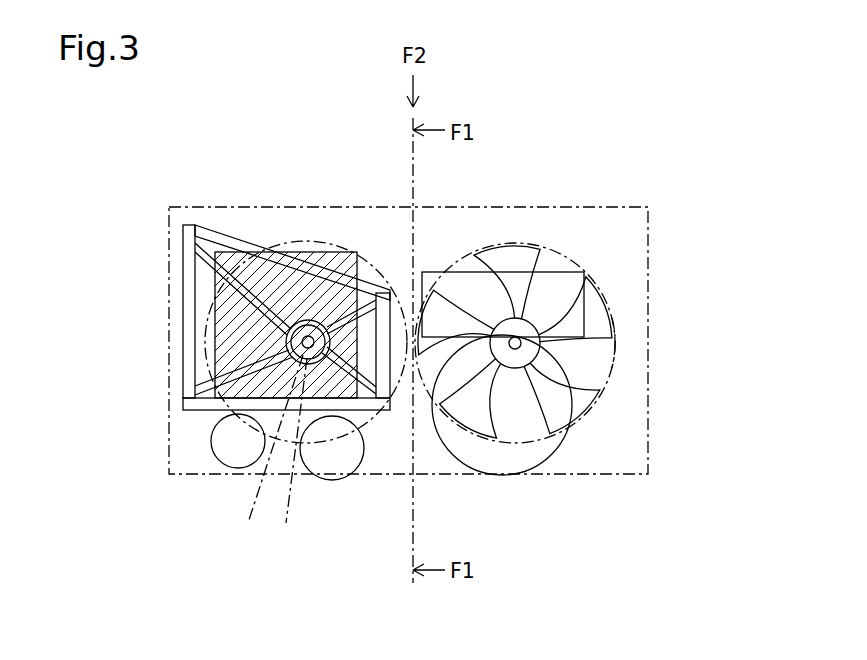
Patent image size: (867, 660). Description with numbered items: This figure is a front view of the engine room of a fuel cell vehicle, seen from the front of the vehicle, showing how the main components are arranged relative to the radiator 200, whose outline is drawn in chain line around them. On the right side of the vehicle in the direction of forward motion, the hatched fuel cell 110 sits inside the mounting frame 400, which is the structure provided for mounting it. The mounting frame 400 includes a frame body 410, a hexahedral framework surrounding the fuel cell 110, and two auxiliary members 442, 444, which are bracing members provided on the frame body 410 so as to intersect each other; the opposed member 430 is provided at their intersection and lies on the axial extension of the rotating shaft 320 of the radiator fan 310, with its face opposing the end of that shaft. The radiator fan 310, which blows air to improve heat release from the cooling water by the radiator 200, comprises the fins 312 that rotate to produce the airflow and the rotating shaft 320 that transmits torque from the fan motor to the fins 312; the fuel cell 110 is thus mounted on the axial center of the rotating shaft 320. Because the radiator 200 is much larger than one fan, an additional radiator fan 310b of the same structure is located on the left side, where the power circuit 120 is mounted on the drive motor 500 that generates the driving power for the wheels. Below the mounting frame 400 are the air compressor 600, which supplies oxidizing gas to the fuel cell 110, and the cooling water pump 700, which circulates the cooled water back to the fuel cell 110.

The fuel cell 110 is at (305, 243).
The power circuit 120 is at (518, 318).
The radiator 200 is at (648, 240).
The radiator fan 310 is at (271, 474).
The fins 312 is at (266, 452).
The rotating shaft 320 is at (293, 454).
The additional radiator fan 310b is at (615, 323).
The mounting frame 400 is at (208, 317).
The frame body 410 is at (183, 298).
The opposed member 430 is at (286, 345).
The auxiliary member 442 is at (195, 262).
The auxiliary member 444 is at (200, 378).
The drive motor 500 is at (548, 455).
The air compressor 600 is at (358, 471).
The cooling water pump 700 is at (215, 468).